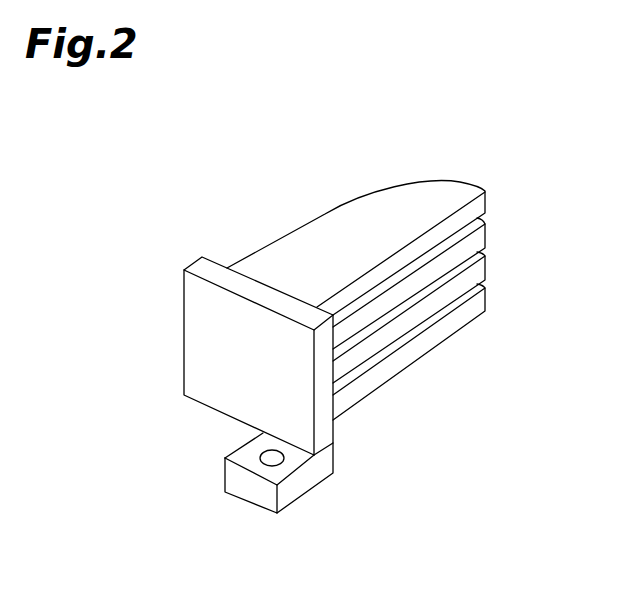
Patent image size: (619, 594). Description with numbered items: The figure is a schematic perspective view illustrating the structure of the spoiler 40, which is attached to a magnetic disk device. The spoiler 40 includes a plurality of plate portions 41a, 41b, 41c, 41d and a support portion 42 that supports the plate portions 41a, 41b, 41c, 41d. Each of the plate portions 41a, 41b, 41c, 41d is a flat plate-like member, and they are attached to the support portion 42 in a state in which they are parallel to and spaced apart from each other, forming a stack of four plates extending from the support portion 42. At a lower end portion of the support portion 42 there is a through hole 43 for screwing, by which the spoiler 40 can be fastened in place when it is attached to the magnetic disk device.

The spoiler 40 is at (166, 170).
The plate portion 41a is at (485, 189).
The plate portion 41b is at (485, 227).
The plate portion 41c is at (485, 264).
The plate portion 41d is at (485, 297).
The support portion 42 is at (203, 342).
The through hole 43 is at (262, 466).